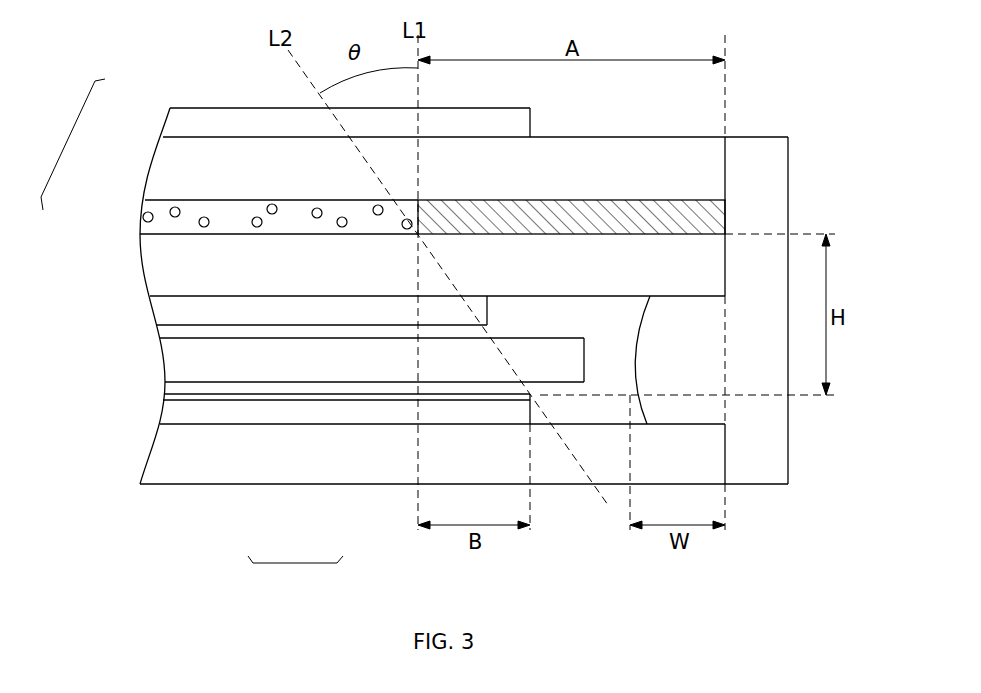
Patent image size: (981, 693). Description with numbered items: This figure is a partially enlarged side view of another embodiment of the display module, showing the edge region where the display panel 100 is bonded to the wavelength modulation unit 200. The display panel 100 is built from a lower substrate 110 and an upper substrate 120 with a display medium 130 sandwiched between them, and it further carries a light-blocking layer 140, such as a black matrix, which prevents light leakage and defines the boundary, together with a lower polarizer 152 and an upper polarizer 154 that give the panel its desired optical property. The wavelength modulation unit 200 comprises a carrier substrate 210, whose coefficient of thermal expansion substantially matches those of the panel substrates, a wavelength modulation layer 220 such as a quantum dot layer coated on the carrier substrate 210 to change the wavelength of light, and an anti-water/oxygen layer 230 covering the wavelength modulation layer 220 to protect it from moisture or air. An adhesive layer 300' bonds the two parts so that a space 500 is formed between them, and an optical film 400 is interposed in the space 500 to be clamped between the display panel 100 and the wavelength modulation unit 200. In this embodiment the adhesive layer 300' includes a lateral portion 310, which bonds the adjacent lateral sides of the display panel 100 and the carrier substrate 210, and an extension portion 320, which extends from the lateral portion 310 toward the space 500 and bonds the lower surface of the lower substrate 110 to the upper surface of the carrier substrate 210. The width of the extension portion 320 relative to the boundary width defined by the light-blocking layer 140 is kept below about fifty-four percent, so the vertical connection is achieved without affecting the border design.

The display panel 100 is at (71, 144).
The lower substrate 110 is at (163, 263).
The upper substrate 120 is at (197, 158).
The display medium 130 is at (167, 207).
The light-blocking layer 140 is at (713, 218).
The lower polarizer 152 is at (170, 312).
The upper polarizer 154 is at (210, 118).
The wavelength modulation unit 200 is at (295, 574).
The carrier substrate 210 is at (258, 452).
The wavelength modulation layer 220 is at (328, 412).
The anti-water/oxygen layer 230 is at (165, 397).
The adhesive layer 300' is at (852, 316).
The lateral portion 310 is at (777, 293).
The extension portion 320 is at (702, 373).
The optical film 400 is at (197, 360).
The space 500 is at (627, 330).